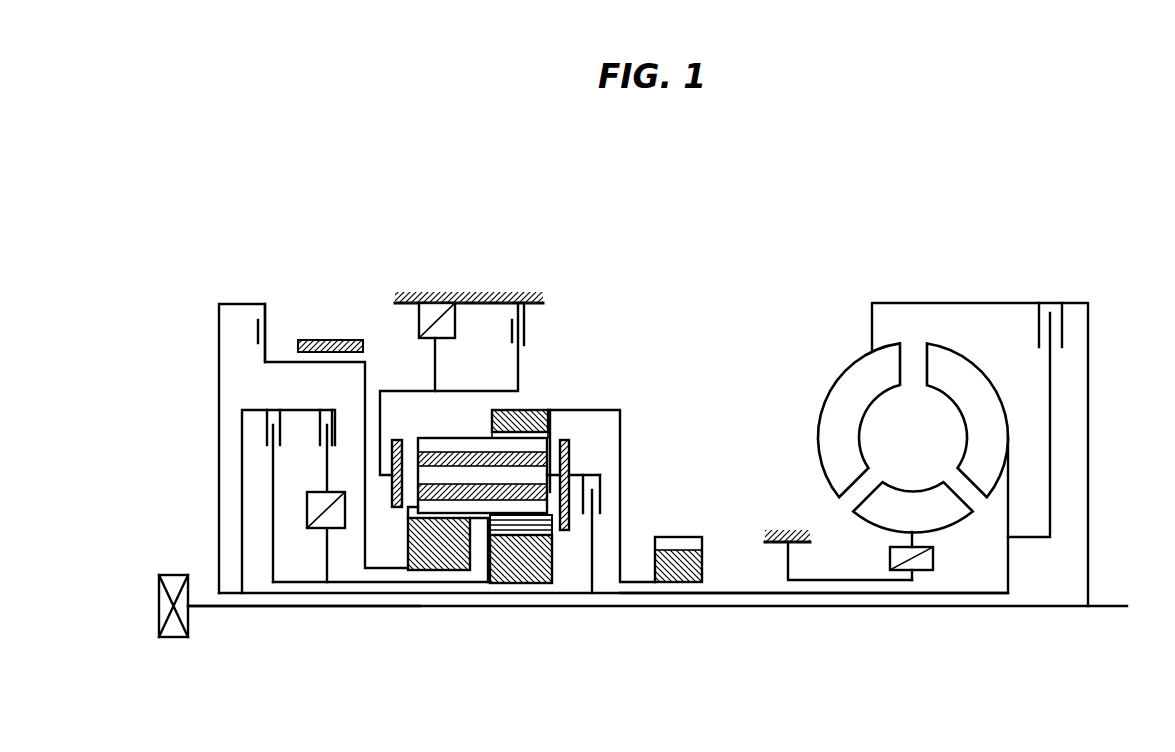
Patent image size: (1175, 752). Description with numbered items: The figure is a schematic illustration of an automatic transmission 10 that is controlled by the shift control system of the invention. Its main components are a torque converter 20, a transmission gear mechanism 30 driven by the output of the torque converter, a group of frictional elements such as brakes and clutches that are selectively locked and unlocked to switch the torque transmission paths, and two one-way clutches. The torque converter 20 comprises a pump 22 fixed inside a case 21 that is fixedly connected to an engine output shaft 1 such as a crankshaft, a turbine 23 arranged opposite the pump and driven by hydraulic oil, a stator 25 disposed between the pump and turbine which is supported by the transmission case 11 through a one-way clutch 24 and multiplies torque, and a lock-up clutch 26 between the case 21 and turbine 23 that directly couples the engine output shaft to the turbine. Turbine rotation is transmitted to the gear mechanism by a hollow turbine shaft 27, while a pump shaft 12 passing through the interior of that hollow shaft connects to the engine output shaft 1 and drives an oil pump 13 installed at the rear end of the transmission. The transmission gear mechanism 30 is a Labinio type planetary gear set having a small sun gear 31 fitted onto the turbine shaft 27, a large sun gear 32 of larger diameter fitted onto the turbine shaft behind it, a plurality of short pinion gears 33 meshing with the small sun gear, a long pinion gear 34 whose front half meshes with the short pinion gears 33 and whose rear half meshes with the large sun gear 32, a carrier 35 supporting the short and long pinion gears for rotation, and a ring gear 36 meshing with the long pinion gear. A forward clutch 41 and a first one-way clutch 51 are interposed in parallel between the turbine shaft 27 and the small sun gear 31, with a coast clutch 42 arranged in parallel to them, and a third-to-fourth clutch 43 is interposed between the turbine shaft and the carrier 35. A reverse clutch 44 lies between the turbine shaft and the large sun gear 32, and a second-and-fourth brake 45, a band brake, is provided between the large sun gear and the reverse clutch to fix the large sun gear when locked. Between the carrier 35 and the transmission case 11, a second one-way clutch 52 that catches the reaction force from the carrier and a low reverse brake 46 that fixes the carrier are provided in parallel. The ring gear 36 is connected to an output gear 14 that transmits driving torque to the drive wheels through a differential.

The engine output shaft 1 is at (1112, 605).
The automatic transmission 10 is at (1098, 296).
The transmission case 11 is at (467, 292).
The pump shaft 12 is at (252, 607).
The oil pump 13 is at (175, 640).
The output gear 14 is at (675, 540).
The torque converter 20 is at (908, 397).
The case 21 is at (981, 302).
The pump 22 is at (843, 390).
The turbine 23 is at (973, 379).
The one-way clutch 24 is at (936, 557).
The stator 25 is at (907, 483).
The lock-up clutch 26 is at (1068, 335).
The turbine shaft 27 is at (723, 592).
The transmission gear mechanism 30 is at (613, 402).
The small sun gear 31 is at (528, 567).
The large sun gear 32 is at (443, 553).
The short pinion gears 33 is at (540, 538).
The long pinion gear 34 is at (456, 440).
The carrier 35 is at (568, 442).
The ring gear 36 is at (533, 414).
The forward clutch 41 is at (325, 408).
The coast clutch 42 is at (272, 408).
The 3-4 clutch 43 is at (592, 478).
The reverse clutch 44 is at (268, 330).
The 2-4 brake 45 is at (340, 338).
The low reverse brake 46 is at (528, 332).
The first one-way clutch 51 is at (307, 504).
The second one-way clutch 52 is at (457, 323).